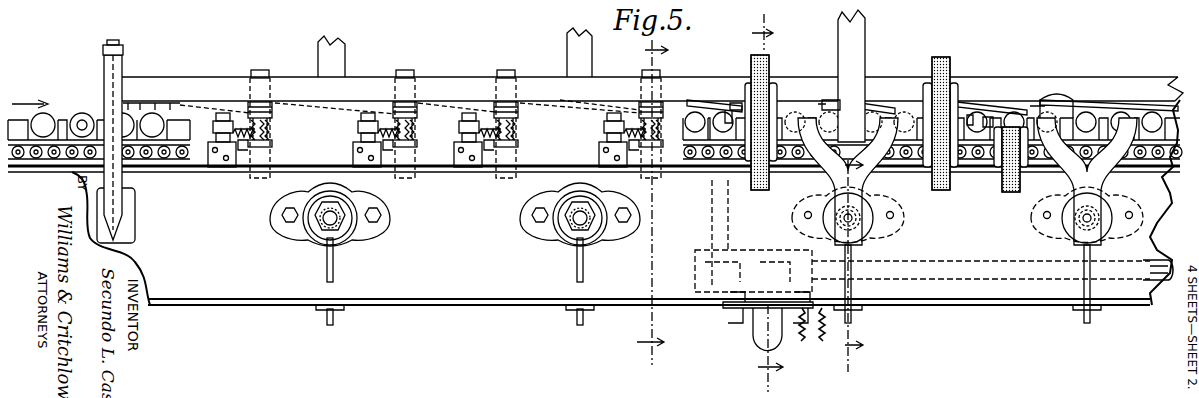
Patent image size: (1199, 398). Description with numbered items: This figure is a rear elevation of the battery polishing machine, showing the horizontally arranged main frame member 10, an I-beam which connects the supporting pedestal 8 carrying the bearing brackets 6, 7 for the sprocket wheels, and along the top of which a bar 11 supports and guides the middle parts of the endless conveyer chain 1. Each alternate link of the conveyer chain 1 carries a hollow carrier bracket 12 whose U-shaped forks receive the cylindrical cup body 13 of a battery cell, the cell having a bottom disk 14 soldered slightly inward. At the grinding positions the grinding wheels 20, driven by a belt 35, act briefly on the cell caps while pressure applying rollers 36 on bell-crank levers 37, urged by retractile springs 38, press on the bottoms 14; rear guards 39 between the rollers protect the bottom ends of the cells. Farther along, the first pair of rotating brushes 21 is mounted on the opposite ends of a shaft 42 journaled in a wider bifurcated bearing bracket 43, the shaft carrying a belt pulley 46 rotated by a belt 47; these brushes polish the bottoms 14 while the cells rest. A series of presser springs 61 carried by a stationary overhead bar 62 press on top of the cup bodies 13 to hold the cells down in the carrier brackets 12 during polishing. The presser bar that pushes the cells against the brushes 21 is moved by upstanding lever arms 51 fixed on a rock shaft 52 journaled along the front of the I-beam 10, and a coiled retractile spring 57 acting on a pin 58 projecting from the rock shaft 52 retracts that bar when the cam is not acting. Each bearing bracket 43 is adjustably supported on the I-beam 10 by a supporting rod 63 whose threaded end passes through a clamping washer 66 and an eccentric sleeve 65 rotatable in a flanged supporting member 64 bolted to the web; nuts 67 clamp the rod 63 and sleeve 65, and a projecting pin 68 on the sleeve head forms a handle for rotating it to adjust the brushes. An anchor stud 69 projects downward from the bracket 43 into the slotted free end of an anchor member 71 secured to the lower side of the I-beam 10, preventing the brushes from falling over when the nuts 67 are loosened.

The conveyer chain 1 is at (135, 160).
The bearing bracket 6 is at (651, 201).
The bearing bracket 7 is at (765, 203).
The supporting pedestal 8 is at (849, 266).
The main frame member 10 is at (1158, 240).
The bar 11 is at (167, 160).
The carrier bracket 12 is at (63, 117).
The cup body 13 is at (83, 118).
The bottom disk 14 is at (50, 116).
The grinding wheel 20 is at (257, 70).
The brush 21 is at (773, 60).
The belt 35 is at (323, 55).
The pressure applying roller 36 is at (272, 124).
The bell-crank lever 37 is at (360, 127).
The retractile spring 38 is at (275, 142).
The rear guard 39 is at (193, 134).
The shaft 42 is at (733, 105).
The bearing bracket 43 is at (870, 167).
The belt pulley 46 is at (832, 104).
The belt 47 is at (855, 50).
The lever arm 51 is at (720, 221).
The rock shaft 52 is at (1153, 277).
The coiled retractile spring 57 is at (818, 338).
The pin 58 is at (805, 337).
The presser spring 61 is at (173, 100).
The overhead bar 62 is at (225, 84).
The supporting rod 63 is at (323, 221).
The flanged supporting member 64 is at (362, 228).
The eccentric sleeve 65 is at (348, 228).
The clamping washer 66 is at (870, 223).
The nut 67 is at (343, 240).
The projecting pin 68 is at (327, 264).
The anchor stud 69 is at (336, 321).
The anchor member 71 is at (318, 309).